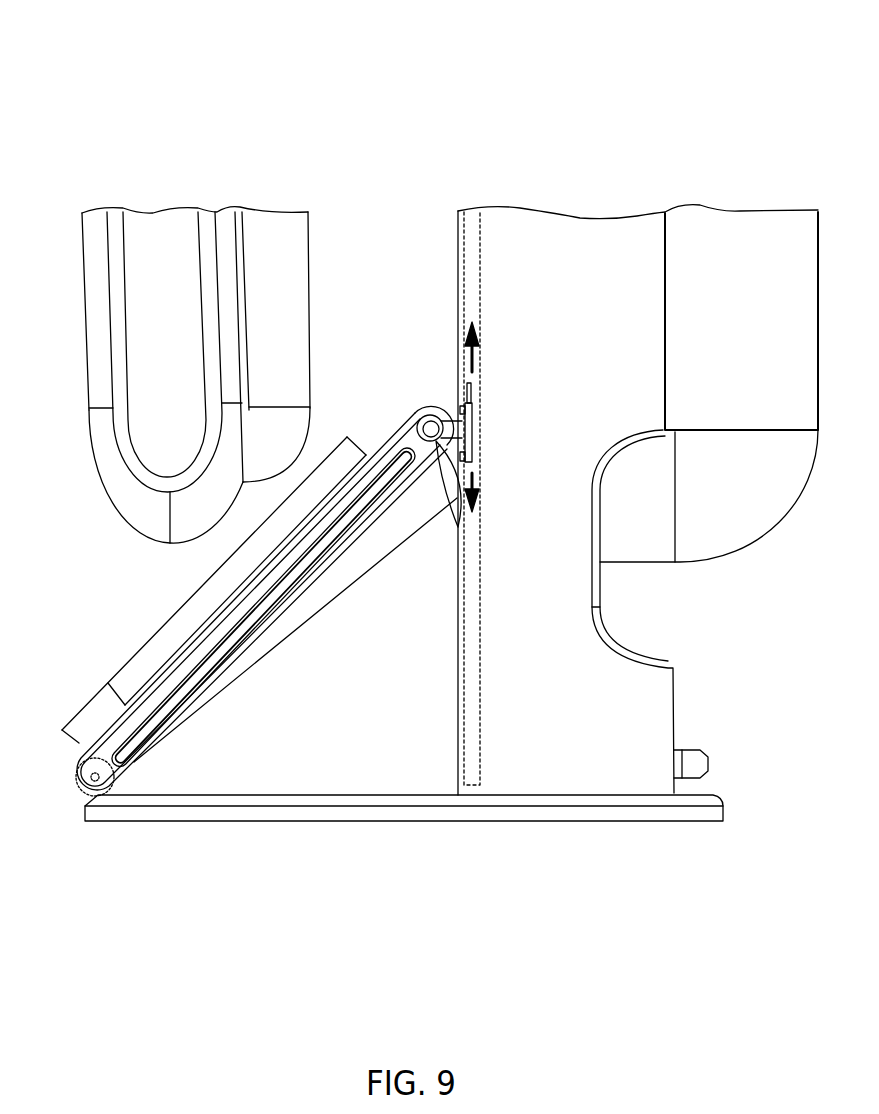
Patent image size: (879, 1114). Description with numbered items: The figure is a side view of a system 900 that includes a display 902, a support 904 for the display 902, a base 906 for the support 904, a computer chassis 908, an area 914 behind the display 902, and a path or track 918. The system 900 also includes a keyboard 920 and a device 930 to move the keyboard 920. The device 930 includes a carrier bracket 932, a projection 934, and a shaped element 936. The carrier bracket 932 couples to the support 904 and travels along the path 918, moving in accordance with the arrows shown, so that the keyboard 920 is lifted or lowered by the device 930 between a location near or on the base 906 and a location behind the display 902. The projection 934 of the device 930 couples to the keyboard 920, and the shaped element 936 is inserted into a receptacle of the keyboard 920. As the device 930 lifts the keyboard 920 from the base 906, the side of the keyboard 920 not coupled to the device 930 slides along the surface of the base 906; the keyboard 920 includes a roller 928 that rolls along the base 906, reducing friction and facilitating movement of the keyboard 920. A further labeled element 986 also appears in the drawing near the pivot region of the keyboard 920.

The system 900 is at (107, 55).
The display 902 is at (102, 498).
The support 904 is at (600, 617).
The base 906 is at (724, 806).
The computer chassis 908 is at (720, 562).
The area behind the display 914 is at (390, 273).
The path or track 918 is at (481, 277).
The keyboard 920 is at (158, 638).
The roller 928 is at (87, 794).
The device 930 is at (475, 430).
The carrier bracket 932 is at (476, 414).
The projection 934 is at (435, 403).
The shaped element 936 is at (420, 417).
The cam member 986 is at (461, 533).